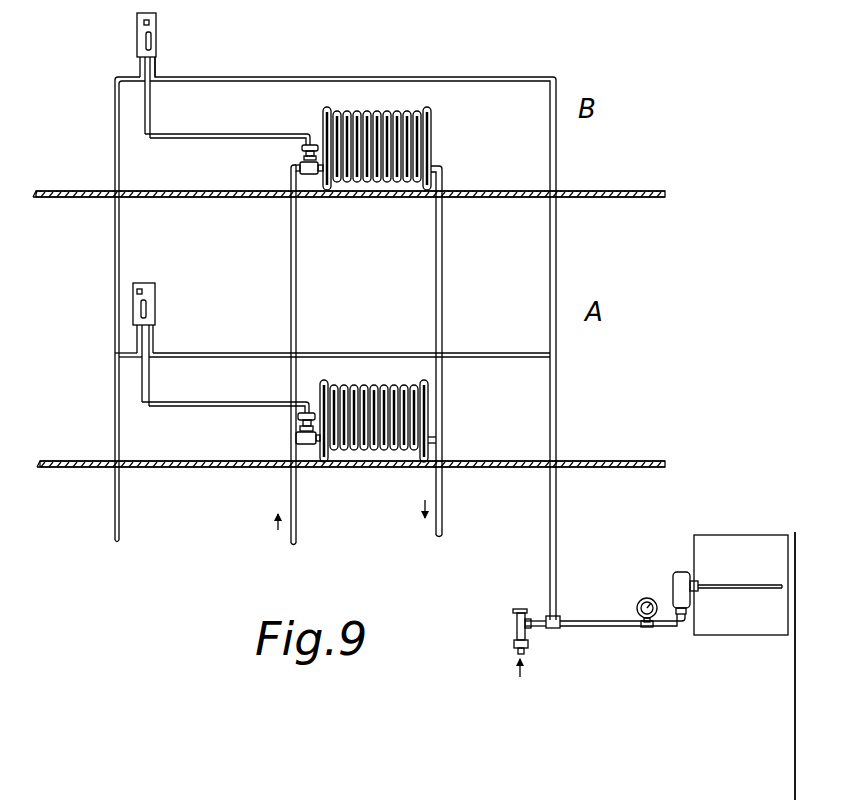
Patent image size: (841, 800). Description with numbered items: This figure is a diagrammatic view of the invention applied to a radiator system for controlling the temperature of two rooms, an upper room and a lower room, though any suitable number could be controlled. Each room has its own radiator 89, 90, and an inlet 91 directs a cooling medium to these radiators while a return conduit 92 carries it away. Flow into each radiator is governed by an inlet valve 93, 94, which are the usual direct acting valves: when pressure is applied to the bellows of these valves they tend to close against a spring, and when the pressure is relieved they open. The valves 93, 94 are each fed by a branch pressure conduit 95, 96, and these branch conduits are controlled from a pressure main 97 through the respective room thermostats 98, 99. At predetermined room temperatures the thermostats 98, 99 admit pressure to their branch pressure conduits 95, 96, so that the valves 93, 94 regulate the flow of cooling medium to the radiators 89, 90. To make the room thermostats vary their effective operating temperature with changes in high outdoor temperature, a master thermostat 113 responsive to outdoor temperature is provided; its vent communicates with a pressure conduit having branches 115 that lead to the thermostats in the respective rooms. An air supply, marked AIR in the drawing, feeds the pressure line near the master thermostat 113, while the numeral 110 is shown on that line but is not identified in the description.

The radiator 89 is at (386, 377).
The radiator 90 is at (395, 144).
The inlet 91 is at (291, 492).
The return conduit 92 is at (443, 487).
The inlet valve 93 is at (296, 436).
The inlet valve 94 is at (300, 165).
The branch pressure conduit 95 is at (212, 402).
The branch pressure conduit 96 is at (212, 134).
The pressure main 97 is at (114, 386).
The room thermostat 98 is at (157, 298).
The room thermostat 99 is at (158, 31).
The compressed air supply pipe 110 is at (600, 582).
The master thermostat 113 is at (680, 571).
The branch conduit 115 is at (490, 69).